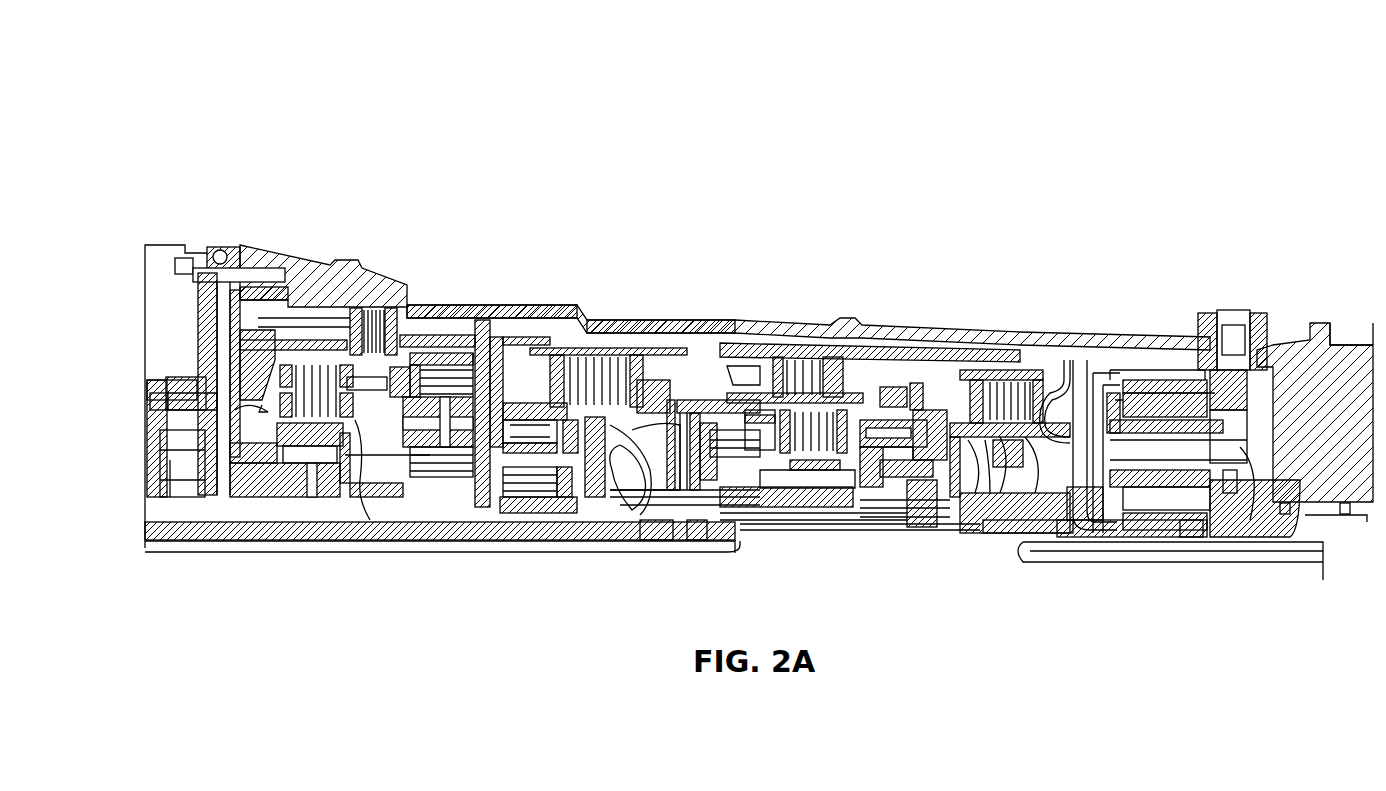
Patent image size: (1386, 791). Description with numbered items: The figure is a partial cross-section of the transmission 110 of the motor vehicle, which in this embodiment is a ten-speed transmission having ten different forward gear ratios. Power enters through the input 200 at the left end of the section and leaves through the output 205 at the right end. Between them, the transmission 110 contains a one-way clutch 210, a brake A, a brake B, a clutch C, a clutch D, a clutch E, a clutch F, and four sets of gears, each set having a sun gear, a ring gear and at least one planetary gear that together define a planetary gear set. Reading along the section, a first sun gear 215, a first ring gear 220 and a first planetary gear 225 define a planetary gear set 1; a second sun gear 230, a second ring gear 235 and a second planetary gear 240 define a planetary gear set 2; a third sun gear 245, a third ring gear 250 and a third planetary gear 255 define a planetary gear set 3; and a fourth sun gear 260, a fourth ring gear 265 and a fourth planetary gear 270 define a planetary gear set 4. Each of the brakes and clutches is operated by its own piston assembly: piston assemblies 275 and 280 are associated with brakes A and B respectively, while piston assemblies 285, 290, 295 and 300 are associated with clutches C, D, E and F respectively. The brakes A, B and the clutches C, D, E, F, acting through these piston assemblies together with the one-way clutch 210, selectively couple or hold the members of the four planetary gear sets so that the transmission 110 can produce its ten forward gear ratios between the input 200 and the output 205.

The transmission 110 is at (1082, 122).
The input 200 is at (352, 541).
The output 205 is at (1275, 520).
The one-way clutch 210 is at (262, 425).
The first sun gear 215 is at (430, 445).
The first ring gear 220 is at (440, 370).
The first planetary gear 225 is at (430, 430).
The second sun gear 230 is at (585, 460).
The second ring gear 235 is at (490, 360).
The second planetary gear 240 is at (540, 450).
The third sun gear 245 is at (920, 515).
The third ring gear 250 is at (922, 405).
The third planetary gear 255 is at (928, 410).
The fourth sun gear 260 is at (1170, 500).
The fourth ring gear 265 is at (1148, 383).
The fourth planetary gear 270 is at (1170, 447).
The piston assembly 275 is at (262, 320).
The piston assembly 280 is at (262, 345).
The piston assembly 285 is at (645, 370).
The piston assembly 290 is at (728, 480).
The piston assembly 295 is at (1043, 400).
The piston assembly 300 is at (765, 365).
The brake A is at (337, 325).
The brake B is at (235, 430).
The clutch C is at (537, 385).
The clutch D is at (779, 448).
The clutch E is at (958, 380).
The clutch F is at (852, 373).
The planetary gear set 1 is at (380, 420).
The planetary gear set 2 is at (575, 490).
The planetary gear set 3 is at (965, 490).
The planetary gear set 4 is at (1234, 440).